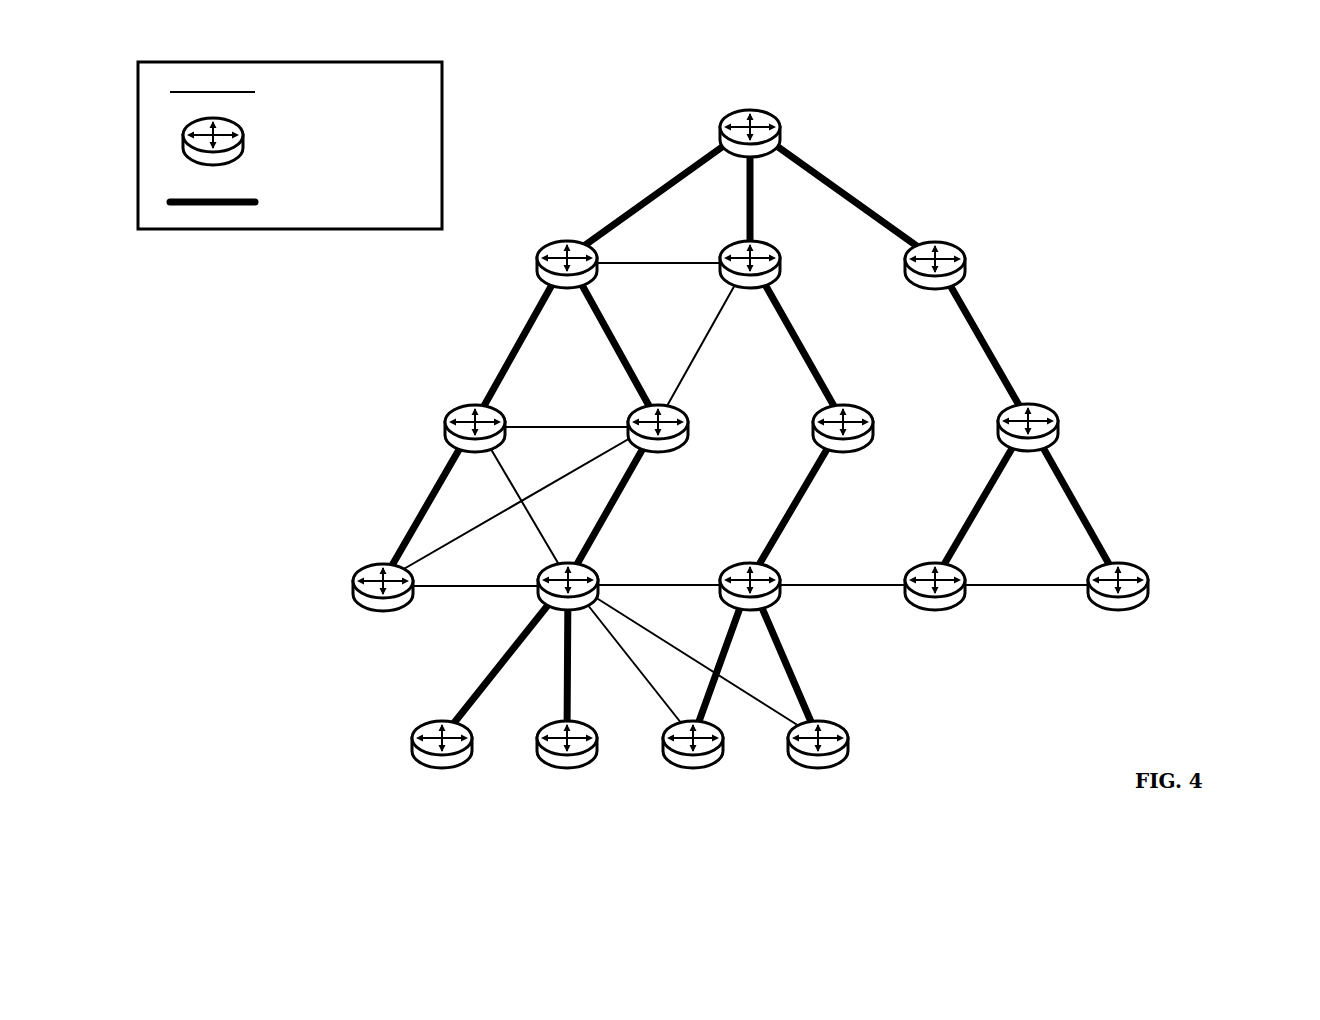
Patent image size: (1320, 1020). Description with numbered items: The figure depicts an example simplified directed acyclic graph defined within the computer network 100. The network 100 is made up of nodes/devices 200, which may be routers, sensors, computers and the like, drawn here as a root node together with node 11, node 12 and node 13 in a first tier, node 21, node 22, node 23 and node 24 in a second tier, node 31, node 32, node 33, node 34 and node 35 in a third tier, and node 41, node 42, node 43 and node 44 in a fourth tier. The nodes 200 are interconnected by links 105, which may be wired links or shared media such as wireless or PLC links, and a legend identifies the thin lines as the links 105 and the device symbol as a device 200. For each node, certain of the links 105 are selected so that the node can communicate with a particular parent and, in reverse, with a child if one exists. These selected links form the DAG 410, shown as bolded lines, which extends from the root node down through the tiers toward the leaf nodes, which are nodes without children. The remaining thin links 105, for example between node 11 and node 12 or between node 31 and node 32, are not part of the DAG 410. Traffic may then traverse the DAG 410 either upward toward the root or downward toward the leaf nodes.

The computer network 100 is at (1263, 85).
The links 105 is at (644, 409).
The nodes/devices 200 is at (297, 141).
The DAG 410 is at (644, 432).
The node 11 is at (567, 278).
The node 12 is at (750, 278).
The node 13 is at (935, 279).
The node 21 is at (475, 442).
The node 22 is at (658, 442).
The node 23 is at (843, 442).
The node 24 is at (1028, 441).
The node 31 is at (383, 601).
The node 32 is at (569, 600).
The node 33 is at (750, 600).
The node 34 is at (935, 600).
The node 35 is at (1118, 600).
The node 41 is at (442, 758).
The node 42 is at (567, 758).
The node 43 is at (693, 758).
The node 44 is at (818, 758).